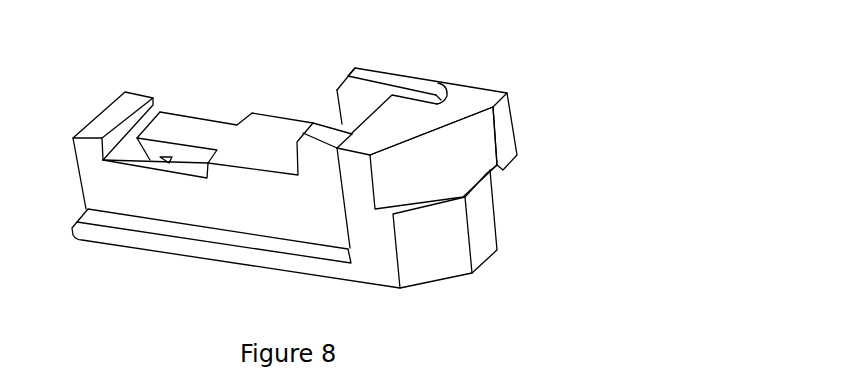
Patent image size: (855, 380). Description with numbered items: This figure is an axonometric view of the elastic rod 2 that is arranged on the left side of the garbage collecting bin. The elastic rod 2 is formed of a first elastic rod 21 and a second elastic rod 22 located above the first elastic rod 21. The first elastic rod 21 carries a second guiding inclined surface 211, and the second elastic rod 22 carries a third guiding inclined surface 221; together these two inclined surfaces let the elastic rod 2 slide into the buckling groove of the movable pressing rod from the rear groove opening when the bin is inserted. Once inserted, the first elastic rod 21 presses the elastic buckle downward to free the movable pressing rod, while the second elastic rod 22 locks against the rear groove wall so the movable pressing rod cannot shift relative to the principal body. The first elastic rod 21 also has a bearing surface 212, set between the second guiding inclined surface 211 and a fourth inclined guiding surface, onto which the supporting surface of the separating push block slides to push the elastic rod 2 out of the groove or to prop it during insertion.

The elastic rod 2 is at (356, 161).
The first elastic rod 21 is at (356, 203).
The second guiding inclined surface 211 is at (435, 248).
The bearing surface 212 is at (483, 227).
The second elastic rod 22 is at (471, 108).
The third guiding inclined surface 221 is at (437, 158).